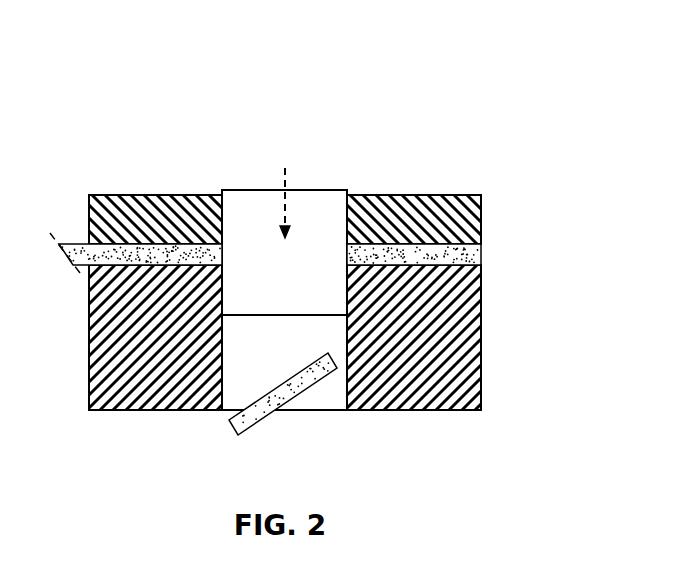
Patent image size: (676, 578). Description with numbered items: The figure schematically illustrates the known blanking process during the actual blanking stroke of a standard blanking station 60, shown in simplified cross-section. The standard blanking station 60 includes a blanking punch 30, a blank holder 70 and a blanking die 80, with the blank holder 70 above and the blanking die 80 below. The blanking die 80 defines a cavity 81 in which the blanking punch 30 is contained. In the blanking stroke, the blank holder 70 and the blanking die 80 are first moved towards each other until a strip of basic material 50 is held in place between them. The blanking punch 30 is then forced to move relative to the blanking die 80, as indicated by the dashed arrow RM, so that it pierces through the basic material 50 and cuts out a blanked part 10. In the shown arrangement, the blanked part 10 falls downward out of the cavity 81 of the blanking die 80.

The blanked part 10 is at (307, 383).
The blanking punch 30 is at (240, 200).
The basic material 50 is at (465, 252).
The standard blanking station 60 is at (384, 134).
The blank holder 70 is at (133, 208).
The blanking die 80 is at (452, 357).
The cavity 81 is at (271, 353).